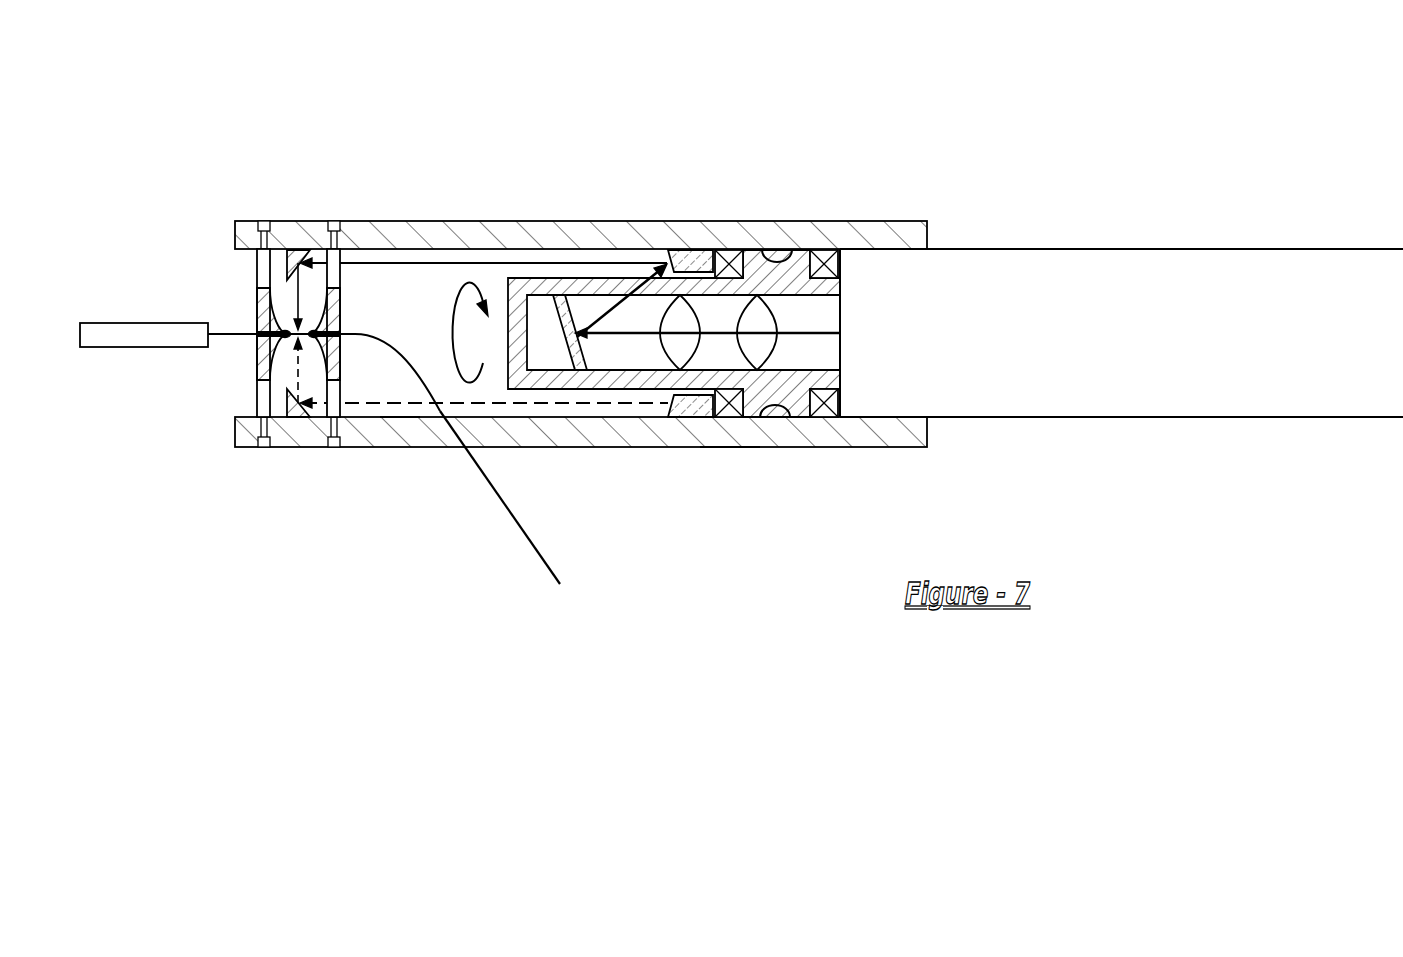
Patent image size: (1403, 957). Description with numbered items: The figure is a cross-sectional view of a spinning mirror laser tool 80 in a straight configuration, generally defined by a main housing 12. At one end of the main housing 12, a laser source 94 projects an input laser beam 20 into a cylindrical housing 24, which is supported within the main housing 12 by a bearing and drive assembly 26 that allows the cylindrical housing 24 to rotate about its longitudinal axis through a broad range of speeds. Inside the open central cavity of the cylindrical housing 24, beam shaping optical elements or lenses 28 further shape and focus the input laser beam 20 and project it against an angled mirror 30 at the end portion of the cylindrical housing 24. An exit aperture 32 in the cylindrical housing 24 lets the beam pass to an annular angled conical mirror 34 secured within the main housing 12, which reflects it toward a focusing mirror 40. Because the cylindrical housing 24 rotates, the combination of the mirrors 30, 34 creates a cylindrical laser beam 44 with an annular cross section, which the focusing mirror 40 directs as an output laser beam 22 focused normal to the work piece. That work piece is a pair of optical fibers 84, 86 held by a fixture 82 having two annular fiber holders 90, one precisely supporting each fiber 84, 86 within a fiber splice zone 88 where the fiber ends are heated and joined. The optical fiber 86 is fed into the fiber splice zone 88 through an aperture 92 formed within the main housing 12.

The main housing 12 is at (483, 221).
The input laser beam 20 is at (827, 313).
The output laser beam 22 is at (273, 325).
The cylindrical housing 24 is at (565, 278).
The bearing and drive assembly 26 is at (832, 250).
The beam shaping optical elements 28 is at (670, 352).
The angled mirror 30 is at (558, 372).
The exit aperture 32 is at (632, 282).
The annular angled mirror 34 is at (688, 257).
The focusing mirror 40 is at (297, 250).
The cylindrical laser beam 44 is at (400, 405).
The laser tool 80 is at (740, 555).
The fixture 82 is at (245, 400).
The optical fiber 84 is at (242, 338).
The optical fiber 86 is at (400, 338).
The fiber splice zone 88 is at (312, 362).
The annular fiber holders 90 is at (316, 300).
The aperture 92 is at (462, 445).
The laser source 94 is at (1267, 280).